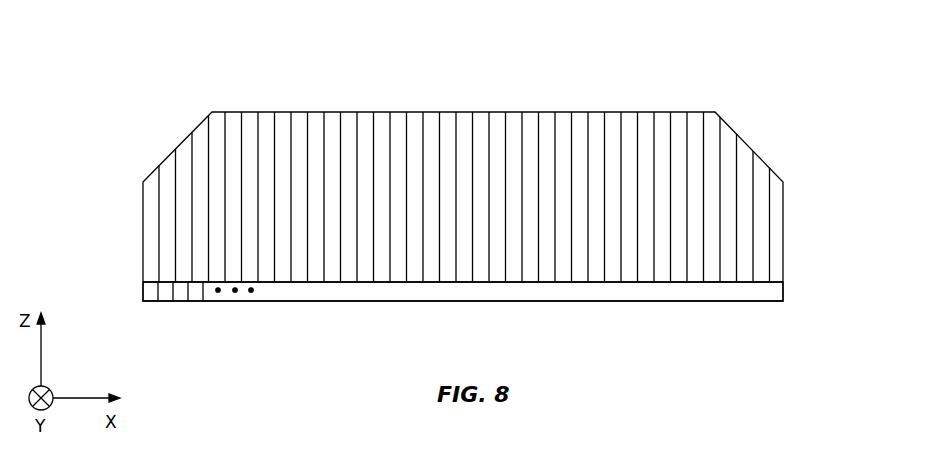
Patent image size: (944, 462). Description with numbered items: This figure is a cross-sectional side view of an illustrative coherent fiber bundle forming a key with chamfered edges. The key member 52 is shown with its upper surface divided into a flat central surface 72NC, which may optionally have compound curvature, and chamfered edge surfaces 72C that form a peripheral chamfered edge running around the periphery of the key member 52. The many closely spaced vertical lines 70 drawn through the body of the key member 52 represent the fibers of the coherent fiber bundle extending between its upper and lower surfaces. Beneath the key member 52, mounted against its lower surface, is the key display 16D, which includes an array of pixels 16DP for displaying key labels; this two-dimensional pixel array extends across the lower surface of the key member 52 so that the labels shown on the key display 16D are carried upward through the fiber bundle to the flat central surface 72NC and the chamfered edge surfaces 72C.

The key member 52 is at (833, 113).
The signal lines 70 is at (463, 202).
The flat central surface 72NC is at (708, 100).
The chamfered edge surfaces 72C is at (463, 188).
The key display 16D is at (463, 321).
The pixels 16DP is at (151, 291).